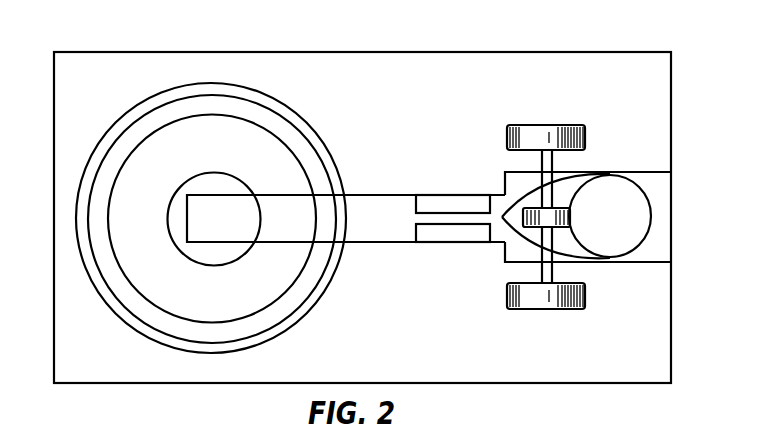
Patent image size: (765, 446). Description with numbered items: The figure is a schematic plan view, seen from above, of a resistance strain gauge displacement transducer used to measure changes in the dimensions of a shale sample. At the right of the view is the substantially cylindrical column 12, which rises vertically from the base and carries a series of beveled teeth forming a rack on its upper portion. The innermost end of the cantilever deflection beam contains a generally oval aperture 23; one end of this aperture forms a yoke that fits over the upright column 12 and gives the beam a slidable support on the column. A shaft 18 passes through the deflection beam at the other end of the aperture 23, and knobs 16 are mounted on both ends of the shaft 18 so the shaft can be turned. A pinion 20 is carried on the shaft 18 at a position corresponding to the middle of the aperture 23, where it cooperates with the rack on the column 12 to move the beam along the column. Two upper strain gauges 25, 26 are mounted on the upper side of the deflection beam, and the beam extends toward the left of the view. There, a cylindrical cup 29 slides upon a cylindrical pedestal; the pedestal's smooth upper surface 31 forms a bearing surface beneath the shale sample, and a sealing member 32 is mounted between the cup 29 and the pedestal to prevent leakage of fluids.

The column 12 is at (612, 185).
The knobs 16 is at (550, 125).
The shaft 18 is at (555, 273).
The pinion 20 is at (527, 208).
The aperture 23 is at (533, 233).
The upper strain gauge 25 is at (427, 198).
The upper strain gauge 26 is at (442, 238).
The cylindrical cup 29 is at (277, 103).
The upper surface 31 is at (292, 173).
The sealing member 32 is at (128, 138).